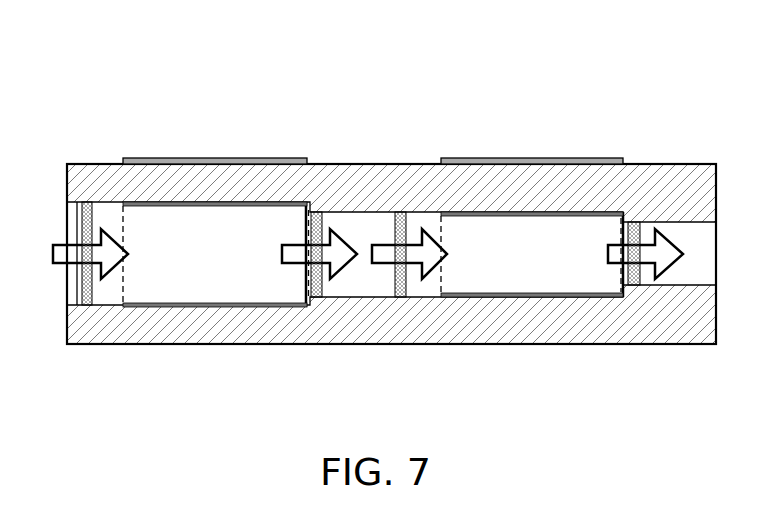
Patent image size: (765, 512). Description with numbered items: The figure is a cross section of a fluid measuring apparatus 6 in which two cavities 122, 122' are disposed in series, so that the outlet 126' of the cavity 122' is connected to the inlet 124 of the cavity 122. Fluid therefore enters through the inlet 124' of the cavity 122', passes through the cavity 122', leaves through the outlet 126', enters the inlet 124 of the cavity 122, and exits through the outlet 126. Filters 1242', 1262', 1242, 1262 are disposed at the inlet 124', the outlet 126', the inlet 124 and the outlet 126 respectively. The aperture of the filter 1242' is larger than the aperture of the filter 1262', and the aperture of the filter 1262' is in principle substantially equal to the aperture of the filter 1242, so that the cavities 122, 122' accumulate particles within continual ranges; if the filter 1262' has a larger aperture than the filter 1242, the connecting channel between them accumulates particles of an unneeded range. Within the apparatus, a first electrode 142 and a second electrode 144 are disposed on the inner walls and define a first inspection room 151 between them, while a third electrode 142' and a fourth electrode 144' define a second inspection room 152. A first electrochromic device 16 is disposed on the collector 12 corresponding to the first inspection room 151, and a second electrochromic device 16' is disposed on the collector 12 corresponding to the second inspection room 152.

The fluid measuring apparatus 6 is at (717, 88).
The collector 12 is at (642, 164).
The first electrochromic device 16 is at (532, 128).
The second electrochromic device 16' is at (215, 128).
The inlet 124 is at (397, 252).
The inlet 124' is at (72, 221).
The outlet 126 is at (660, 242).
The outlet 126' is at (319, 235).
The first inspection room 151 is at (537, 228).
The second inspection room 152 is at (248, 228).
The cavity 122 is at (433, 303).
The cavity 122' is at (121, 299).
The first electrode 142 is at (536, 297).
The third electrode 142' is at (215, 297).
The second electrode 144 is at (532, 337).
The fourth electrode 144' is at (215, 347).
The filter 1242 is at (376, 314).
The filter 1242' is at (54, 287).
The filter 1262 is at (670, 306).
The filter 1262' is at (325, 302).